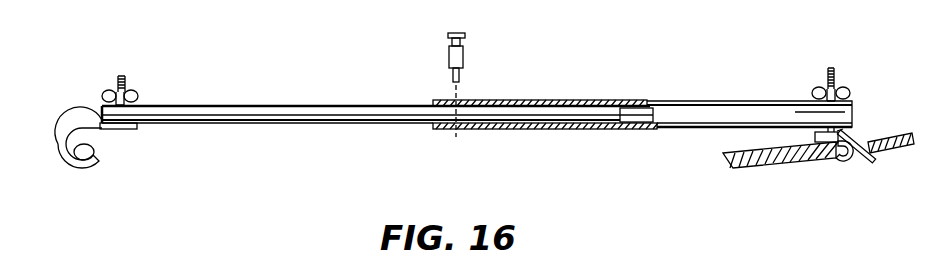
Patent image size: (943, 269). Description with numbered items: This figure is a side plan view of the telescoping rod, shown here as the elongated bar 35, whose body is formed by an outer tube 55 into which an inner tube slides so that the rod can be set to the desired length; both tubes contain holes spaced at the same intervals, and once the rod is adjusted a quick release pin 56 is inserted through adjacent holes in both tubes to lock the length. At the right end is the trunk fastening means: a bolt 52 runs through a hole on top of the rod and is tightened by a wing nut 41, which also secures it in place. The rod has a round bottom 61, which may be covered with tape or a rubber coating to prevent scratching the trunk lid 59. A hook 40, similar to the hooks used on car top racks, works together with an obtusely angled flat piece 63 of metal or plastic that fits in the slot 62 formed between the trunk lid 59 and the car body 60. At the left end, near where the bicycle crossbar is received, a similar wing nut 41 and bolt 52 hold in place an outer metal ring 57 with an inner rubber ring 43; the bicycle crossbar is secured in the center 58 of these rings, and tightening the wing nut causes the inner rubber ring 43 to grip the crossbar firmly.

The support bar 35 is at (314, 106).
The hook 40 is at (845, 168).
The wing nut 41 is at (111, 90).
The inner rubber ring 43 is at (57, 170).
The bolt 52 is at (126, 80).
The outer tube 55 is at (605, 134).
The quick release pin 56 is at (463, 46).
The outer metal ring 57 is at (112, 129).
The center of the ring 58 is at (88, 158).
The trunk lid 59 is at (806, 173).
The car body 60 is at (884, 141).
The round bottom 61 is at (822, 148).
The slot 62 is at (863, 133).
The obtusely angled flat piece 63 is at (862, 160).